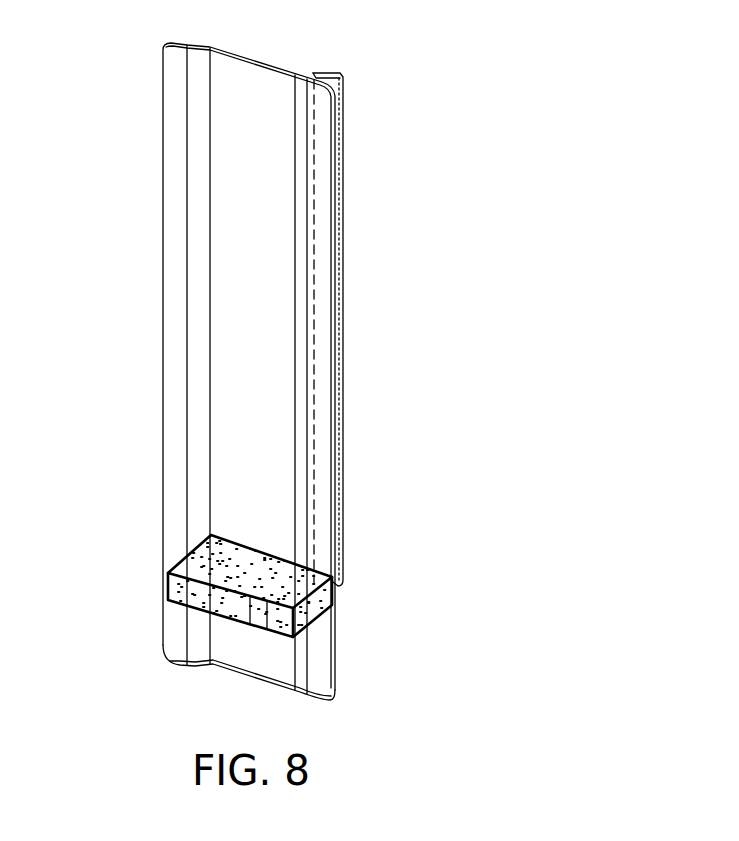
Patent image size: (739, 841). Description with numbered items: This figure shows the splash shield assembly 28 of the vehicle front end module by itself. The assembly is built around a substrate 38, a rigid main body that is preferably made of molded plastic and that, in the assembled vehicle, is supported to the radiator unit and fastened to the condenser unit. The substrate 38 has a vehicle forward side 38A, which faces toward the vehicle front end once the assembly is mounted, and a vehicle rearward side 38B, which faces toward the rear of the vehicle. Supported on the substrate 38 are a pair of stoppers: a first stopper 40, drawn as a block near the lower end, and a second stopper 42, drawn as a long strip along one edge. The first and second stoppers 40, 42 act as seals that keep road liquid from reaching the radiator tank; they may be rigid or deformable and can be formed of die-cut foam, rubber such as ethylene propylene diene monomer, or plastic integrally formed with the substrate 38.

The splash shield assembly 28 is at (281, 359).
The substrate 38 is at (205, 359).
The vehicle forward side 38A is at (173, 130).
The vehicle rearward side 38B is at (257, 58).
The first stopper 40 is at (317, 608).
The second stopper 42 is at (343, 258).